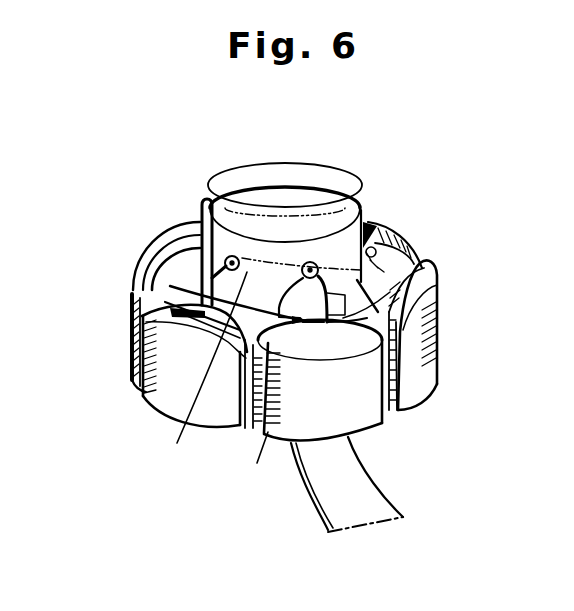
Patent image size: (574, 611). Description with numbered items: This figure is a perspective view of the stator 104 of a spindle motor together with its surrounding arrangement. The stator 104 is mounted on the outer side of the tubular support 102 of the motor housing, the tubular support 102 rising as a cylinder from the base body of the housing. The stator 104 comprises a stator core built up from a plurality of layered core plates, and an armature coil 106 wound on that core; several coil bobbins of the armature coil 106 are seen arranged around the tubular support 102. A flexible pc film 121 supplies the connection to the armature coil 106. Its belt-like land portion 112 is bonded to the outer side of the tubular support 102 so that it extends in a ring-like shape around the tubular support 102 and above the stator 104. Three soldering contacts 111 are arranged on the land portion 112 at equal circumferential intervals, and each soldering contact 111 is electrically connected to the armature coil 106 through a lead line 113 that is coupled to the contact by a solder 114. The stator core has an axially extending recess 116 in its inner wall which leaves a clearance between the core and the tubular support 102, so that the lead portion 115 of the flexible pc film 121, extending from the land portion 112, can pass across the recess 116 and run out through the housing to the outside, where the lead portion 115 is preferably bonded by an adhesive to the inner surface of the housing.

The tubular support 102 is at (322, 159).
The stator 104 is at (128, 324).
The armature coil 106 is at (420, 292).
The soldering contact 111 is at (210, 385).
The land portion 112 is at (386, 228).
The lead line 113 is at (212, 278).
The solder 114 is at (207, 222).
The lead portion 115 is at (320, 512).
The recess 116 is at (320, 323).
The flexible pc film 121 is at (382, 490).